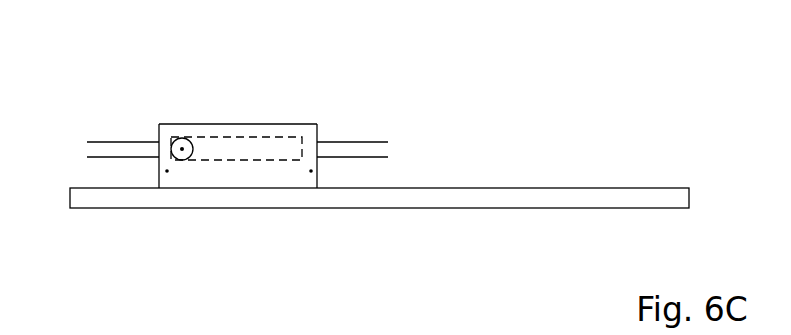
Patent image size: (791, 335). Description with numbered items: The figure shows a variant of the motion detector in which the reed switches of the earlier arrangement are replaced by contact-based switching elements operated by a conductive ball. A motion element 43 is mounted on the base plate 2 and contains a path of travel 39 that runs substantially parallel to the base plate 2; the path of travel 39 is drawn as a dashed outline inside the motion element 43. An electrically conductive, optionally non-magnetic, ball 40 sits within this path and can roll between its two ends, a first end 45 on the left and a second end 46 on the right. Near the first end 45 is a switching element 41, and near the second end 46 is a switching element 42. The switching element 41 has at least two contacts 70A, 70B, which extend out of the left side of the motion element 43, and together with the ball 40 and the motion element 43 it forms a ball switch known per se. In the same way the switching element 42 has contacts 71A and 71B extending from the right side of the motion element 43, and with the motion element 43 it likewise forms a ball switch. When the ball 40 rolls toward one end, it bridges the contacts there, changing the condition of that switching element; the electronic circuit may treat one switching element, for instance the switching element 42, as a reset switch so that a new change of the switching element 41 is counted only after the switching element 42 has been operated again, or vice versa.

The base plate 2 is at (430, 199).
The path of travel 39 is at (242, 137).
The ball 40 is at (183, 149).
The switching element 41 is at (167, 171).
The switching element 42 is at (311, 171).
The motion element 43 is at (310, 124).
The end of the path of travel 45 is at (132, 103).
The end of the path of travel 46 is at (352, 103).
The contact 70A is at (105, 142).
The contact 70B is at (105, 157).
The contact 71A is at (372, 141).
The contact 71B is at (370, 157).